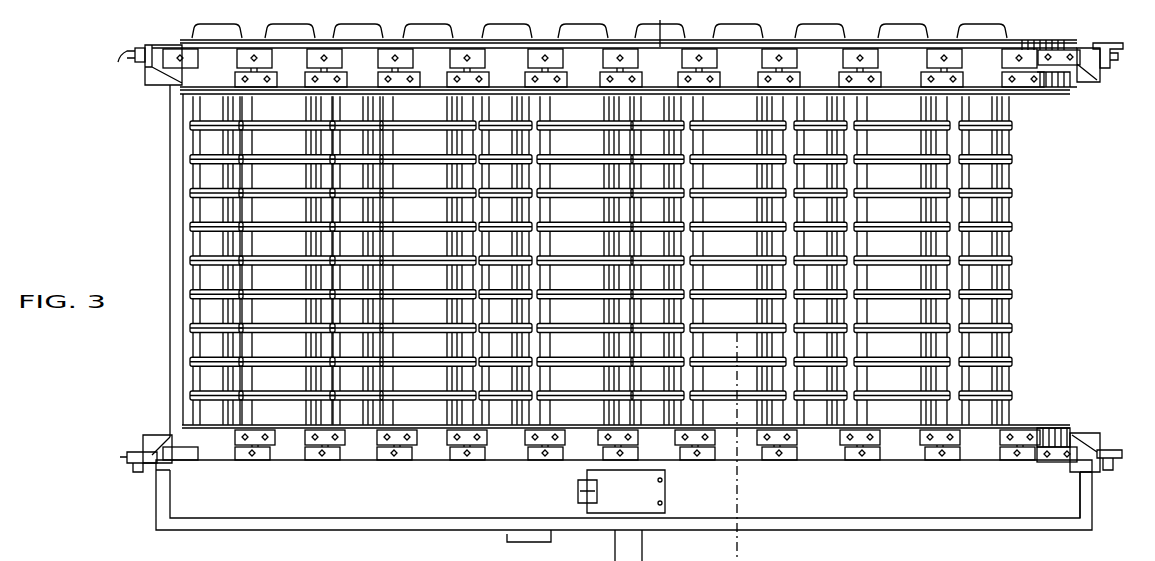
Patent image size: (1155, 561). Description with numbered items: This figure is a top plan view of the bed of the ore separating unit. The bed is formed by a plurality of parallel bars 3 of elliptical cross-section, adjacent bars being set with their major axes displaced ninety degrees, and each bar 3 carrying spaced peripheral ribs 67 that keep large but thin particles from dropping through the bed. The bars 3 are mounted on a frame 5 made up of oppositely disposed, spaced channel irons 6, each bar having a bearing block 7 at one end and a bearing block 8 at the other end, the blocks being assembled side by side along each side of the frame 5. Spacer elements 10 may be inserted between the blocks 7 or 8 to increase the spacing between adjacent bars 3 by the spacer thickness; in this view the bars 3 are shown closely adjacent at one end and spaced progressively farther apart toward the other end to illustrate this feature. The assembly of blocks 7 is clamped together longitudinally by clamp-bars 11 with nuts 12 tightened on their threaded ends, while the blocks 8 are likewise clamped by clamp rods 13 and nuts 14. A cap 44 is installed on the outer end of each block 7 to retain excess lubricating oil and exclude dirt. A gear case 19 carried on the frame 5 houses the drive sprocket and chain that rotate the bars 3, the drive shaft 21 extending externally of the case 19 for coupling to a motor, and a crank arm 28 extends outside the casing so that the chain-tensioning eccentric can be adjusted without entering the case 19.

The bars or rolls 3 is at (1023, 233).
The frame 5 is at (746, 346).
The channel irons 6 is at (665, 31).
The bearing block 7 is at (616, 71).
The bearing block 8 is at (214, 452).
The spacer elements 10 is at (620, 61).
The clamp-bars 11 is at (1097, 82).
The nuts 12 is at (130, 54).
The clamp rods 13 is at (133, 468).
The nuts 14 is at (1109, 516).
The gear case 19 is at (937, 508).
The drive shaft 21 is at (642, 548).
The crank arm 28 is at (518, 540).
The cap 44 is at (755, 23).
The peripheral ribs 67 is at (196, 189).